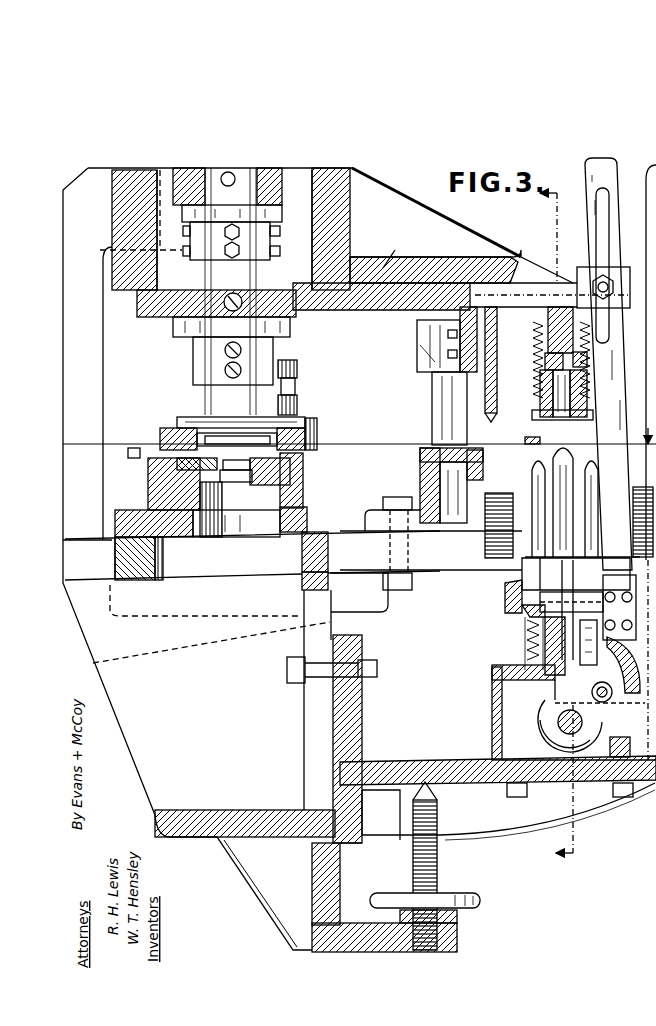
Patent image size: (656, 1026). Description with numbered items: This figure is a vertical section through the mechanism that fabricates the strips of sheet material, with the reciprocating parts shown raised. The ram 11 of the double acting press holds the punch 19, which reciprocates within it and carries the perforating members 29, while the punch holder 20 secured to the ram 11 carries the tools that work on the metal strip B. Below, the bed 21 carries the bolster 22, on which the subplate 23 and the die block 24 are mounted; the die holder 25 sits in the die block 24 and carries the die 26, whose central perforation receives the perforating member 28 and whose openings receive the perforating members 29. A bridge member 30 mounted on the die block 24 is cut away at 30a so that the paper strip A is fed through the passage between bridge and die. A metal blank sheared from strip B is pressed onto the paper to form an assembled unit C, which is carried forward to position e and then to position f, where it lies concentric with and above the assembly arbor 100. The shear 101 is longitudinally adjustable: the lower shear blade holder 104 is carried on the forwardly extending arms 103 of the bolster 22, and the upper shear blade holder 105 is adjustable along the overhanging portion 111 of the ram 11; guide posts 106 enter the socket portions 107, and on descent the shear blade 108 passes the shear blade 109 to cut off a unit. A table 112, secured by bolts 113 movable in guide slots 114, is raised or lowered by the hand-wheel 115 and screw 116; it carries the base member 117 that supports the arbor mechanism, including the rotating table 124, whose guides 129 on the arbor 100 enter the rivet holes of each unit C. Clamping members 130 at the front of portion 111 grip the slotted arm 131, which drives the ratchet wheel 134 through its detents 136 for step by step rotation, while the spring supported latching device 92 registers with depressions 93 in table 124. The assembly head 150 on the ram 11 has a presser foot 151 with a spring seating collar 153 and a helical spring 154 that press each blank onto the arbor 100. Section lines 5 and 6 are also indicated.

The ram 11 is at (354, 222).
The overhanging portion of the ram 111 is at (404, 251).
The punch 19 is at (270, 240).
The punch holder 20 is at (152, 318).
The perforating members 29 is at (194, 360).
The perforating member 28 is at (253, 387).
The bridge member 30 is at (172, 426).
The cut away portion of the bridge member 30a is at (332, 436).
The metal strip B is at (237, 443).
The paper strip A is at (76, 444).
The position e is at (383, 444).
The position f is at (538, 440).
The section line 5 is at (546, 527).
The section line 6 is at (644, 454).
The die holder 25 is at (148, 480).
The die 26 is at (218, 480).
The die block 24 is at (281, 496).
The subplate 23 is at (190, 530).
The bolster 22 is at (150, 572).
The bed 21 is at (361, 554).
The bolts 113 is at (300, 684).
The guide slots 114 is at (314, 735).
The screw 116 is at (439, 868).
The hand-wheel 115 is at (386, 898).
The lower shear blade holder 104 is at (420, 480).
The shear blade 109 is at (486, 454).
The forwardly extending arms 103 is at (446, 562).
The assembly arbor 100 is at (575, 466).
The guides 129 is at (534, 486).
The assembled unit C is at (569, 513).
The assembly head 150 is at (530, 322).
The helical spring 154 is at (535, 352).
The spring seating collar 153 is at (540, 400).
The presser foot 151 is at (548, 420).
The shear 101 is at (497, 376).
The shear blade 108 is at (503, 420).
The upper shear blade holder 105 is at (417, 358).
The socket portions 107 is at (412, 373).
The guide posts 106 is at (434, 406).
The arm 131 is at (608, 364).
The clamping members 130 is at (617, 267).
The table 124 is at (505, 596).
The depressions 93 is at (522, 608).
The spring supported latching device 92 is at (520, 622).
The base member 117 is at (491, 694).
The ratchet wheel 134 is at (550, 735).
The detents 136 is at (563, 770).
The table 112 is at (477, 786).